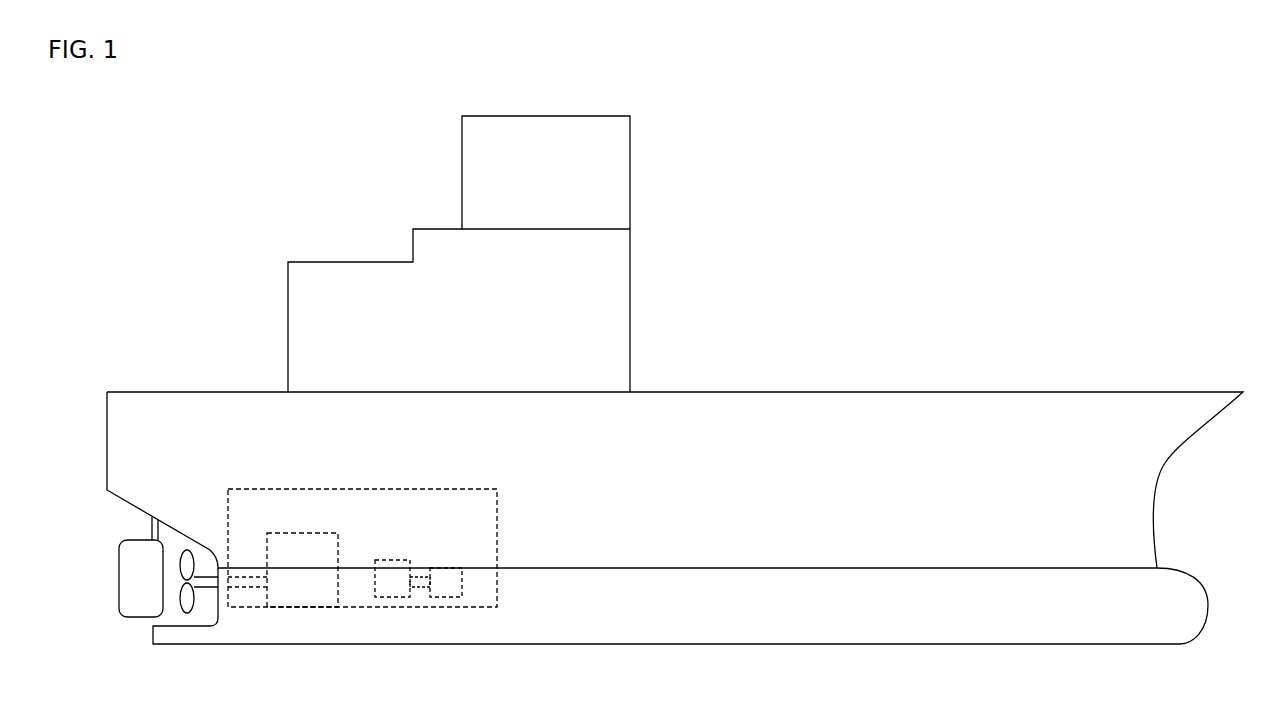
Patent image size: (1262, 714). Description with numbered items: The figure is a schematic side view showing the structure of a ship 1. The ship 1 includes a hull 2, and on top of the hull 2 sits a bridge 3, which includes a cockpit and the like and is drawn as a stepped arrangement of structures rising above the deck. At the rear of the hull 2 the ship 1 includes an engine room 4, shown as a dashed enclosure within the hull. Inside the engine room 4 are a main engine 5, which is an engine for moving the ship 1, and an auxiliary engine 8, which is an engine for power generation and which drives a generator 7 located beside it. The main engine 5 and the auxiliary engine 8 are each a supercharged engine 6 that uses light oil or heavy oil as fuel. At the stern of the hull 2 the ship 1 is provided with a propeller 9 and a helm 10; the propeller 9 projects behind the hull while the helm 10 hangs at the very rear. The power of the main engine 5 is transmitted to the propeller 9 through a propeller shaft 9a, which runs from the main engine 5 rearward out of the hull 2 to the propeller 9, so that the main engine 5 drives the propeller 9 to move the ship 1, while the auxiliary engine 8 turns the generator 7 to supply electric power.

The ship 1 is at (656, 371).
The hull 2 is at (813, 402).
The bridge 3 is at (622, 143).
The engine room 4 is at (492, 600).
The main engine 5 is at (295, 606).
The supercharged engine 6 is at (340, 611).
The generator 7 is at (460, 600).
The auxiliary engine 8 is at (393, 598).
The propeller 9 is at (183, 606).
The propeller shaft 9a is at (207, 591).
The helm 10 is at (119, 577).